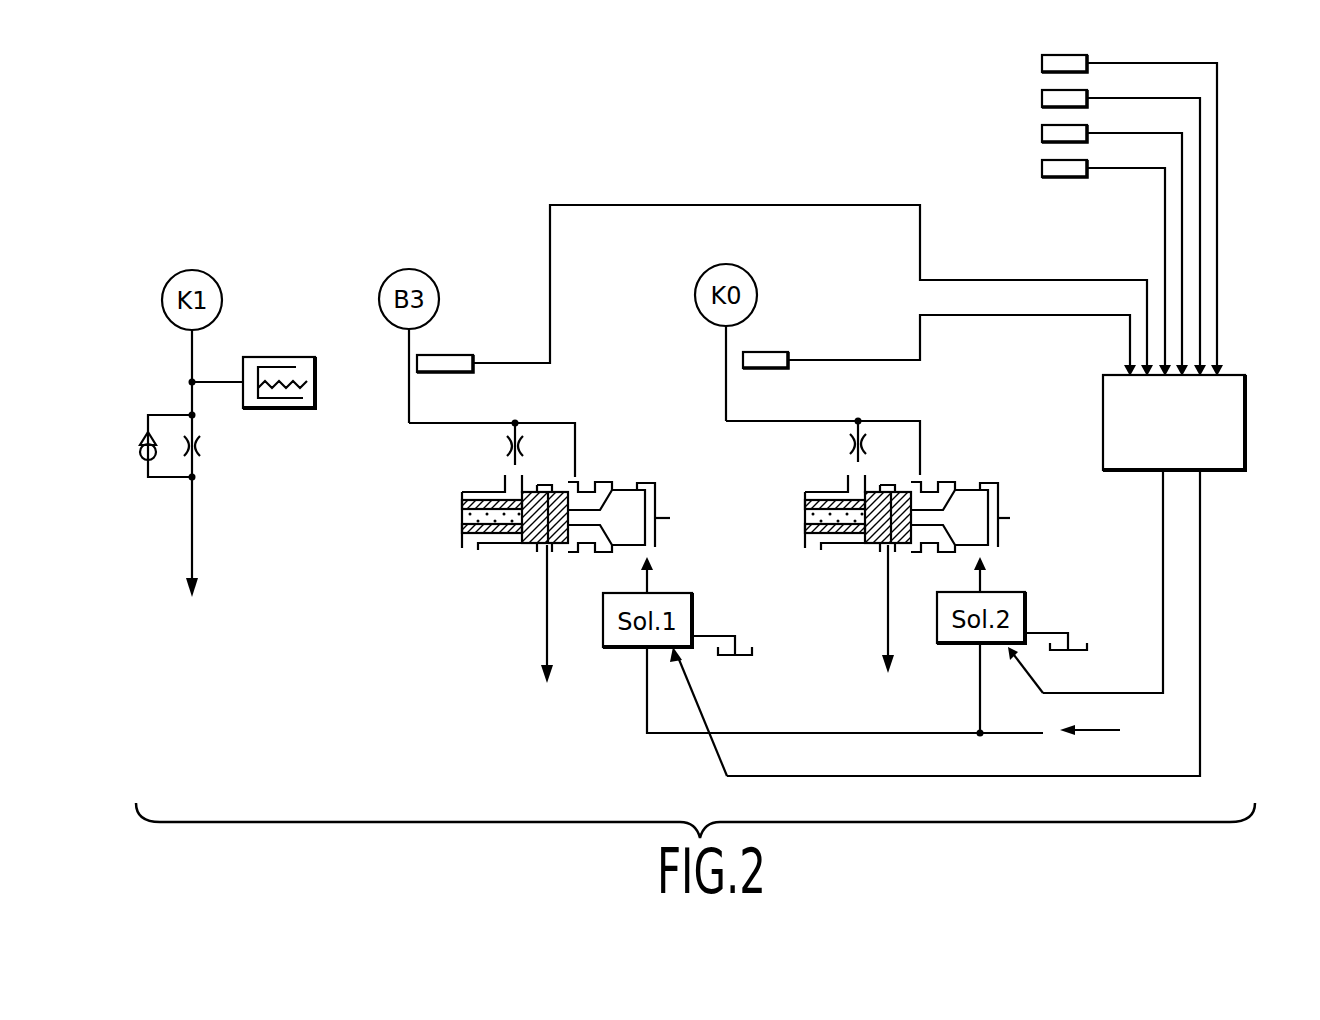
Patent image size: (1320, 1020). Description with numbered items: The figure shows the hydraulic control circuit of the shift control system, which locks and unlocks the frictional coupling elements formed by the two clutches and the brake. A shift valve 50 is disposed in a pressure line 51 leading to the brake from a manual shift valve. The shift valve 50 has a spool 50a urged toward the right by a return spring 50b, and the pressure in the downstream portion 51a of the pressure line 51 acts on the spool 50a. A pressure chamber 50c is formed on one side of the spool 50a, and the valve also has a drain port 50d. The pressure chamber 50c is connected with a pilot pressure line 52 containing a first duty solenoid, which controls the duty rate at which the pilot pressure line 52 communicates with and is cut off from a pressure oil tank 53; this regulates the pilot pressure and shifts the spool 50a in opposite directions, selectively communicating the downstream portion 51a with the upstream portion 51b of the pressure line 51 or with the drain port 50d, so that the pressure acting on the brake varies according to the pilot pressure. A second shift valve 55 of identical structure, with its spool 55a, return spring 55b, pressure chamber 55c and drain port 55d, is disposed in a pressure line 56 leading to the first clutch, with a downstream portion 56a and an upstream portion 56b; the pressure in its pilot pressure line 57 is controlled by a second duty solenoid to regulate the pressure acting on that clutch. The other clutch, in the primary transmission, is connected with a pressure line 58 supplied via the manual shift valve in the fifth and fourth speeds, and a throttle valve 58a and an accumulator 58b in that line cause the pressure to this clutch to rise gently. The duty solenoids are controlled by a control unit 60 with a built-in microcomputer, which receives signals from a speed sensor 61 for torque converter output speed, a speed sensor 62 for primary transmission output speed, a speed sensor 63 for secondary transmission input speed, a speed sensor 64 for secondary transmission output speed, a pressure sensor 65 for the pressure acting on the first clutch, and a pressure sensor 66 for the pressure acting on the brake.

The shift valve 50 is at (605, 462).
The spool 50a is at (632, 490).
The return spring 50b is at (497, 545).
The pressure chamber 50c is at (670, 518).
The drain port 50d is at (603, 552).
The pressure line 51 is at (548, 412).
The downstream portion of pressure line 51a is at (405, 425).
The upstream portion of pressure line 51b is at (540, 628).
The pilot pressure line 52 is at (650, 582).
The pressure oil tank 53 is at (740, 657).
The shift valve 55 is at (968, 462).
The spool 55a is at (975, 490).
The return spring 55b is at (840, 545).
The pressure chamber 55c is at (1010, 518).
The drain port 55d is at (945, 552).
The pressure line 56 is at (846, 412).
The downstream portion of pressure line 56a is at (728, 395).
The upstream portion of pressure line 56b is at (883, 628).
The pilot pressure line 57 is at (983, 580).
The pressure line 58 is at (194, 540).
The throttle valve 58a is at (200, 452).
The accumulator 58b is at (285, 357).
The control unit 60 is at (1240, 470).
The speed sensor 61 is at (1042, 60).
The speed sensor 62 is at (1042, 95).
The speed sensor 63 is at (1042, 130).
The speed sensor 64 is at (1042, 165).
The pressure sensor 65 is at (939, 341).
The pressure sensor 66 is at (465, 355).